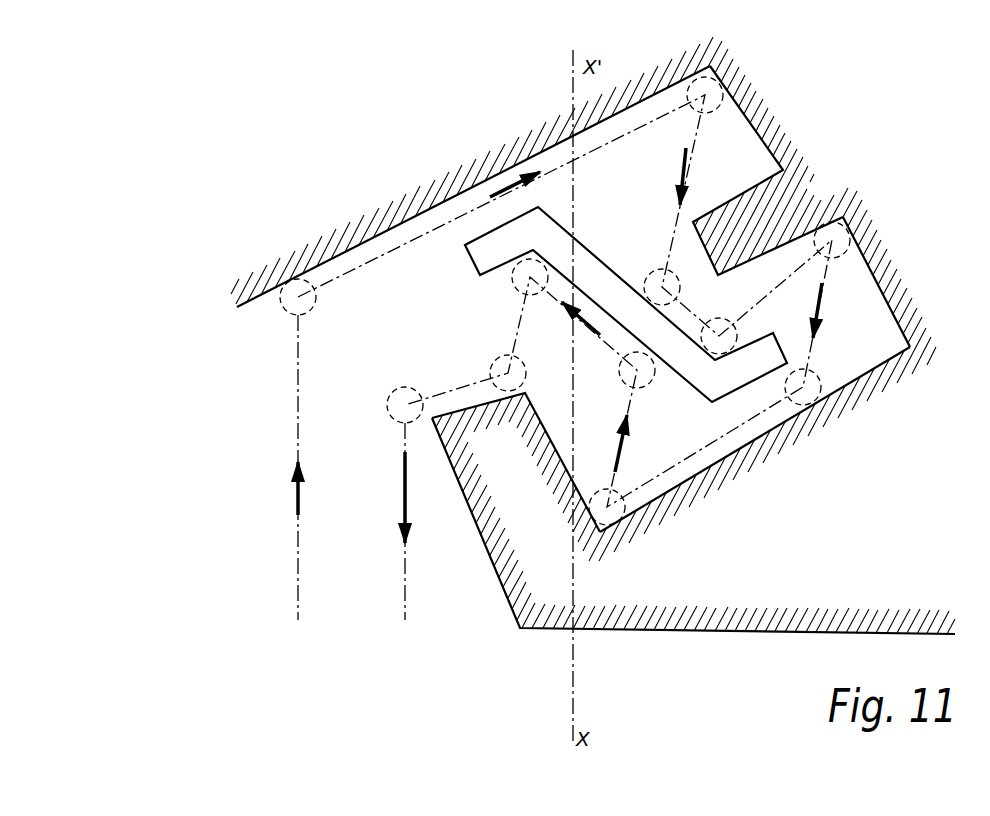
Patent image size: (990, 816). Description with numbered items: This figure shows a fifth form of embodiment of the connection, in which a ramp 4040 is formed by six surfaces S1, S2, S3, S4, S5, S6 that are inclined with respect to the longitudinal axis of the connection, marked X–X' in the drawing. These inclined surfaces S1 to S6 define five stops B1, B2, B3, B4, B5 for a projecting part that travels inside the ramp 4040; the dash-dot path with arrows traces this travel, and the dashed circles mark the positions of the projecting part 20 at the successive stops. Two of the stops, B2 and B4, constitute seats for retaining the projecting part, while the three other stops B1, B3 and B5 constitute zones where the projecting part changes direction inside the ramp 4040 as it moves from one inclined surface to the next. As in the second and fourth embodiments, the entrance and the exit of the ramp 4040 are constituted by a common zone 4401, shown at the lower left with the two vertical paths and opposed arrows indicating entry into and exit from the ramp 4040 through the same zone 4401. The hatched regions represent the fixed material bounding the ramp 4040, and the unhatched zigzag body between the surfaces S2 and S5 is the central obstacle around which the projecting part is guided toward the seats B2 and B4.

The ramp 4040 is at (208, 158).
The ball 20 is at (278, 312).
The common zone 4401 is at (425, 643).
The first inclined surface S1 is at (432, 232).
The second inclined surface S2 is at (612, 260).
The third inclined surface S3 is at (773, 243).
The fourth inclined surface S4 is at (735, 450).
The fifth inclined surface S5 is at (672, 352).
The sixth inclined surface S6 is at (468, 388).
The first stop B1 is at (716, 125).
The second stop B2 is at (730, 332).
The third stop B3 is at (842, 252).
The fourth stop B4 is at (613, 507).
The fifth stop B5 is at (522, 288).